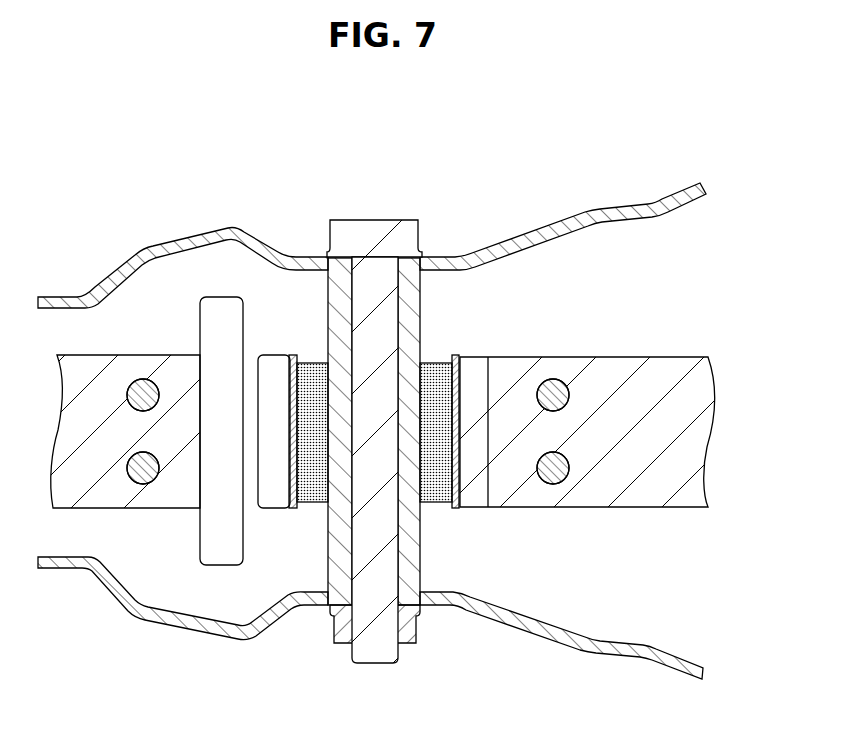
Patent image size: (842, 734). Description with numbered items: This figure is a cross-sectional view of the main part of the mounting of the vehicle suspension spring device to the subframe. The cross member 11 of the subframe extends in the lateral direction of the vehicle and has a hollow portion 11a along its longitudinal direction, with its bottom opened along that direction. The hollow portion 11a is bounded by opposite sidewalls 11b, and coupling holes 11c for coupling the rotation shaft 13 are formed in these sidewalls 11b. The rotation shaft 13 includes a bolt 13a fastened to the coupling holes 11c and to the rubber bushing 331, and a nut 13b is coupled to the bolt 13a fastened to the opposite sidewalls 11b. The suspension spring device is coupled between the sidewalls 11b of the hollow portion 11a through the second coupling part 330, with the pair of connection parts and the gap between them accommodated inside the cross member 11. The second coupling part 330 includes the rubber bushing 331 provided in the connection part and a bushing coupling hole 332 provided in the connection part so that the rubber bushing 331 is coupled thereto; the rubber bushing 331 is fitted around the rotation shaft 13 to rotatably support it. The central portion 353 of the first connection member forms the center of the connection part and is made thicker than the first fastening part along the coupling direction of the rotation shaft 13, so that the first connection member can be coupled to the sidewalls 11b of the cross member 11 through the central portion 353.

The cross member 11 is at (143, 246).
The hollow portion 11a is at (548, 582).
The sidewalls 11b is at (605, 210).
The coupling holes 11c is at (352, 258).
The rotation shaft 13 is at (418, 417).
The bolt 13a is at (400, 220).
The nut 13b is at (418, 635).
The second coupling part 330 is at (519, 373).
The rubber bushing 331 is at (426, 341).
The bushing coupling hole 332 is at (457, 427).
The central portion 353 is at (270, 510).